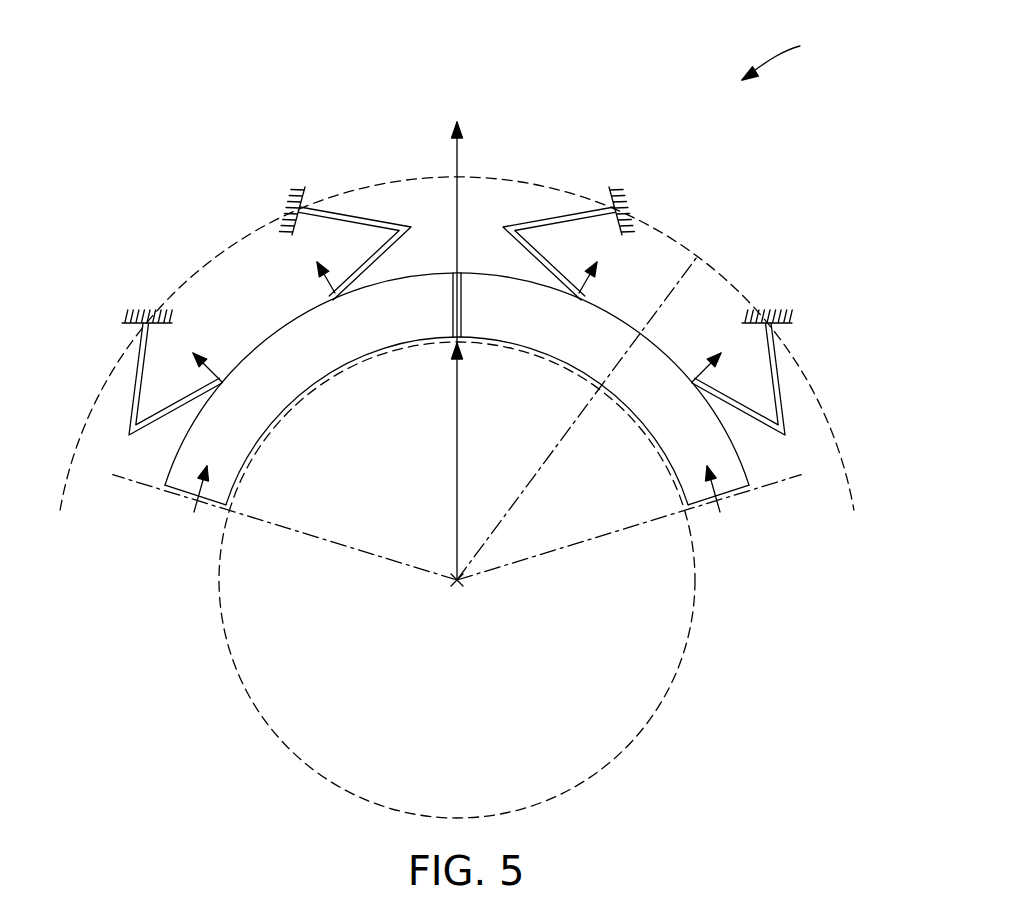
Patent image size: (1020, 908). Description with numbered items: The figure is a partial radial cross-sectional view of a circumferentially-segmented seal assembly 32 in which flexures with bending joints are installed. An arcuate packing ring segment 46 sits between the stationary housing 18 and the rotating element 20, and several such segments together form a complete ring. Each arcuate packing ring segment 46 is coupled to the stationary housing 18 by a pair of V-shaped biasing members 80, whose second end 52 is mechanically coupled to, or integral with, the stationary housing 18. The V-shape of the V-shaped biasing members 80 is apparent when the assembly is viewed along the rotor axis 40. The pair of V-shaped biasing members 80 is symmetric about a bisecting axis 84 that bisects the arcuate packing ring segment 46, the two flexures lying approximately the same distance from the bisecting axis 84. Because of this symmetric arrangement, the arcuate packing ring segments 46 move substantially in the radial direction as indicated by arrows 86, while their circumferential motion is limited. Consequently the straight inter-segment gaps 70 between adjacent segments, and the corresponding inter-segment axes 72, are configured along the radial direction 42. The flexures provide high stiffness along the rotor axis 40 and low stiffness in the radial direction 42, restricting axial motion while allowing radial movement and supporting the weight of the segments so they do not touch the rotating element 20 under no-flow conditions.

The stationary housing 18 is at (205, 262).
The rotating element 20 is at (268, 727).
The seal assembly 32 is at (790, 53).
The rotor axis 40 is at (456, 584).
The radial direction 42 is at (455, 515).
The arcuate packing ring segment 46 is at (194, 514).
The second end 52 is at (298, 200).
The inter-segment gap 70 is at (459, 350).
The inter-segment axis 72 is at (280, 530).
The V-shaped biasing member 80 is at (345, 210).
The bisecting axis 84 is at (515, 510).
The arrows indicating radial motion 86 is at (328, 282).